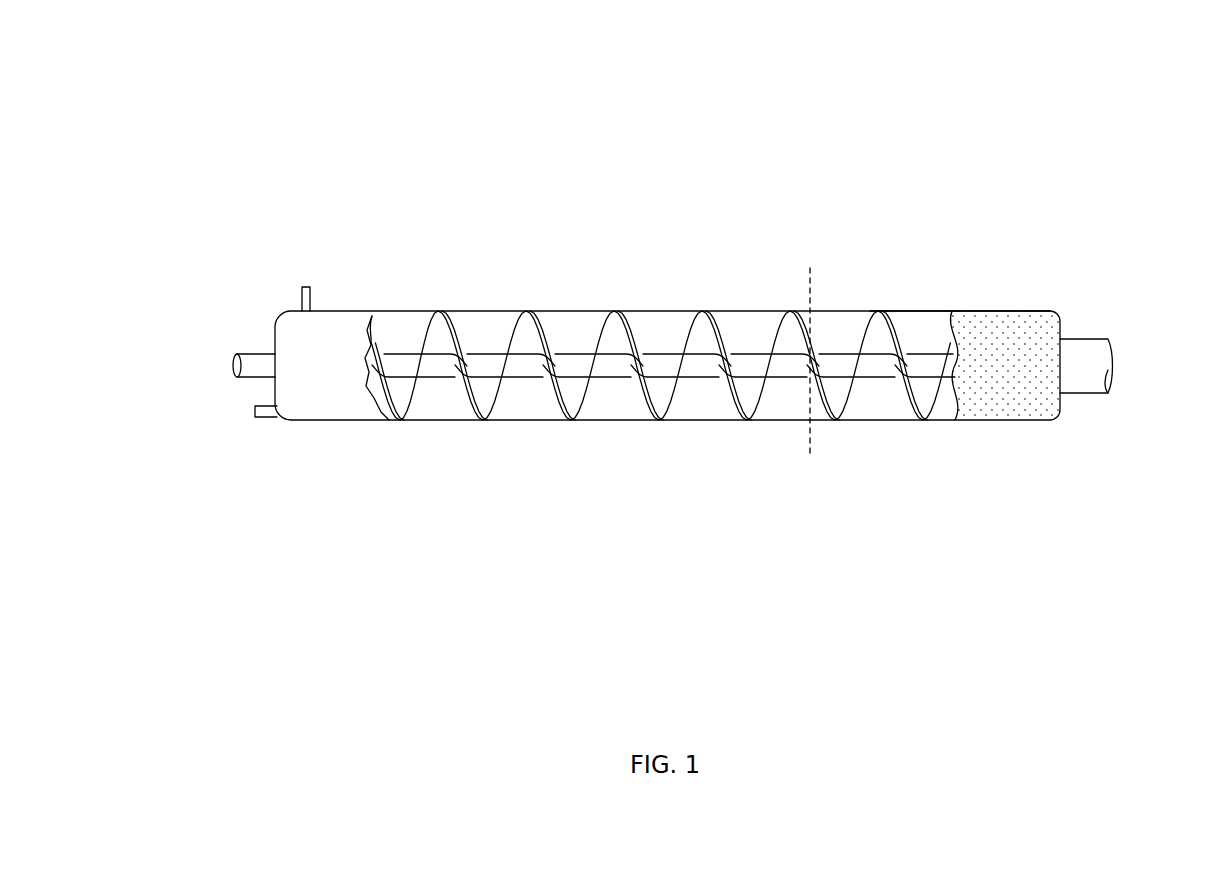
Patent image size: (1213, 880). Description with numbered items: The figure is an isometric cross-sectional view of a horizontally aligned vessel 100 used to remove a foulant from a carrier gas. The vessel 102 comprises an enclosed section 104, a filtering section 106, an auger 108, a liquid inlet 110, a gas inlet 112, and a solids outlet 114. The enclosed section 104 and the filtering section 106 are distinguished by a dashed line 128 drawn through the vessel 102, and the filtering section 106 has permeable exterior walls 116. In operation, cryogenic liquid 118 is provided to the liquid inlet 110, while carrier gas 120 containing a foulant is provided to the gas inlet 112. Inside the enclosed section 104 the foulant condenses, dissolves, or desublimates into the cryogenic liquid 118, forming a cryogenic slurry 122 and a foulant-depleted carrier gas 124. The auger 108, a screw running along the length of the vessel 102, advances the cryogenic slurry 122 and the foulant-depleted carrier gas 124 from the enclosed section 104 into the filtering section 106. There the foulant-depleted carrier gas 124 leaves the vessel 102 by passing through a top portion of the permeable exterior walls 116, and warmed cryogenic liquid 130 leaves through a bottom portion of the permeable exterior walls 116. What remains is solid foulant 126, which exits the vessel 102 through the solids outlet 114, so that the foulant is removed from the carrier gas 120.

The isometric cross-sectional view of a horizontally aligned vessel 100 is at (276, 86).
The vessel 102 is at (278, 318).
The enclosed section 104 is at (640, 310).
The filtering section 106 is at (905, 308).
The auger 108 is at (470, 406).
The liquid inlet 110 is at (312, 300).
The gas inlet 112 is at (267, 418).
The solids outlet 114 is at (1078, 337).
The permeable exterior walls 116 is at (980, 402).
The cryogenic liquid 118 is at (307, 278).
The carrier gas 120 is at (245, 410).
The cryogenic slurry 122 is at (608, 393).
The foulant-depleted carrier gas 124 is at (1006, 311).
The solid foulant 126 is at (1117, 367).
The dashed line 128 is at (811, 350).
The warmed cryogenic liquid 130 is at (1006, 420).